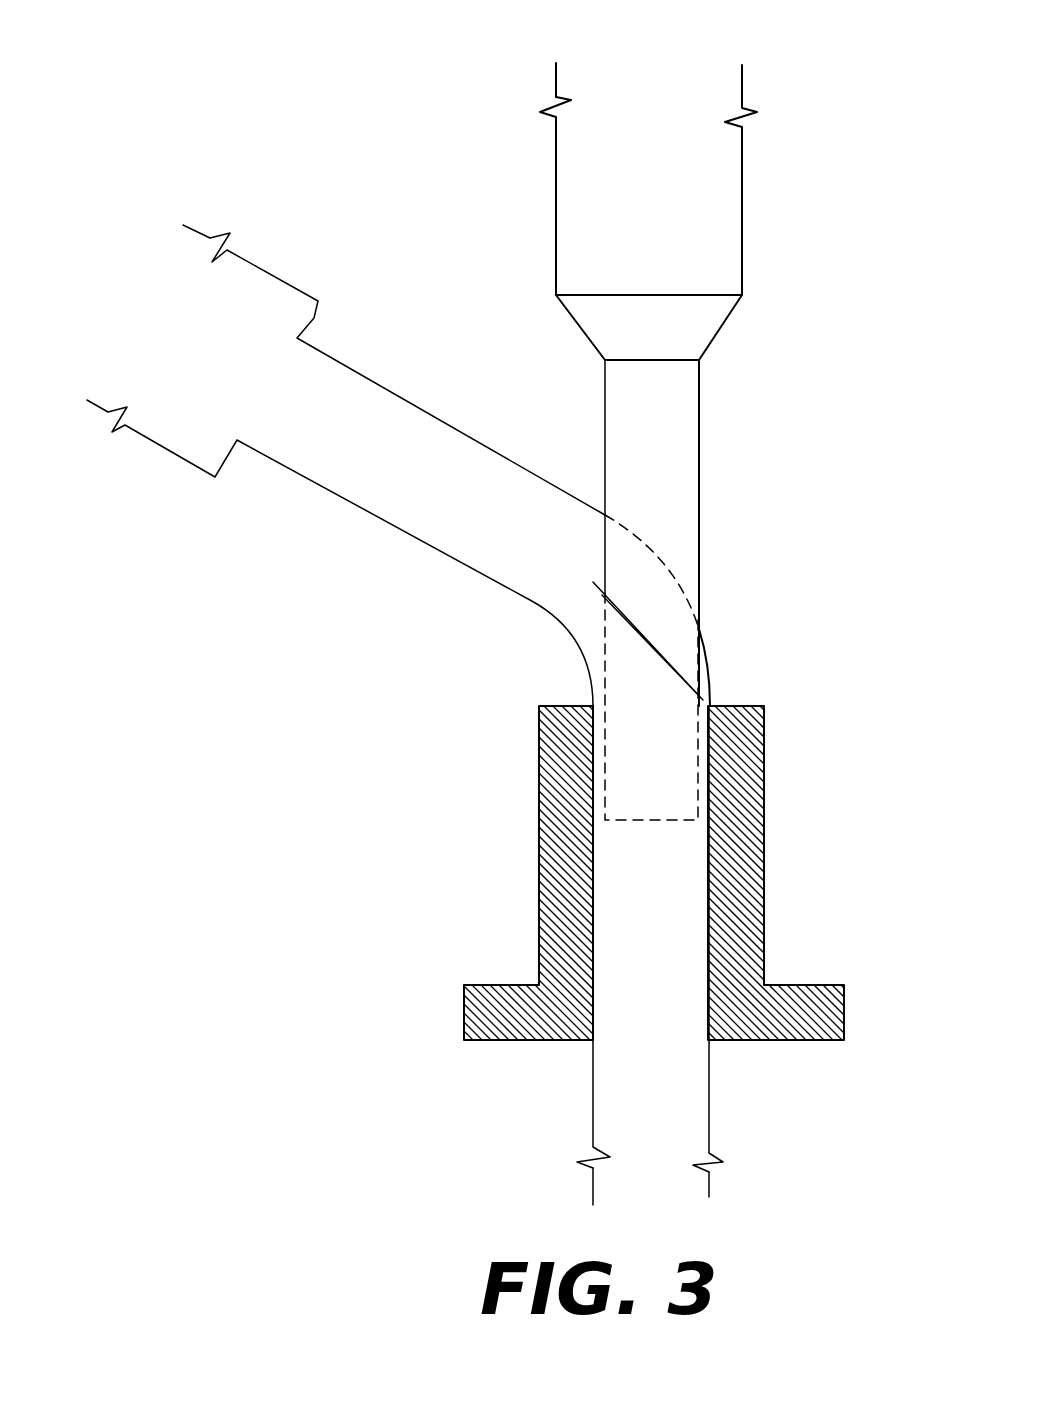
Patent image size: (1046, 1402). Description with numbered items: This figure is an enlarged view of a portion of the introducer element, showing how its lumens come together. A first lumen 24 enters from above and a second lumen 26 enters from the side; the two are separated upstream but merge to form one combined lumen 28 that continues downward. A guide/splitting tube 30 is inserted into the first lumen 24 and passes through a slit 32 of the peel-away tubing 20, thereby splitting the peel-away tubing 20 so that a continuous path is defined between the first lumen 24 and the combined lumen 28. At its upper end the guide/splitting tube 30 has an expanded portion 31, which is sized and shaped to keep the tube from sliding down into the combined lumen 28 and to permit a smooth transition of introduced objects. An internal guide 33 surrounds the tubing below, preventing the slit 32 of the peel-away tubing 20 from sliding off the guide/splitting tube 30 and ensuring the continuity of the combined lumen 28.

The peel-away tubing 20 is at (427, 403).
The first lumen 24 is at (678, 80).
The second lumen 26 is at (173, 283).
The combined lumen 28 is at (635, 1180).
The guide/splitting tube 30 is at (667, 483).
The expanded portion 31 is at (682, 330).
The slit 32 is at (657, 640).
The internal guide 33 is at (498, 982).